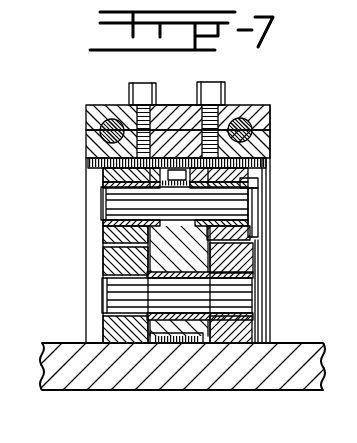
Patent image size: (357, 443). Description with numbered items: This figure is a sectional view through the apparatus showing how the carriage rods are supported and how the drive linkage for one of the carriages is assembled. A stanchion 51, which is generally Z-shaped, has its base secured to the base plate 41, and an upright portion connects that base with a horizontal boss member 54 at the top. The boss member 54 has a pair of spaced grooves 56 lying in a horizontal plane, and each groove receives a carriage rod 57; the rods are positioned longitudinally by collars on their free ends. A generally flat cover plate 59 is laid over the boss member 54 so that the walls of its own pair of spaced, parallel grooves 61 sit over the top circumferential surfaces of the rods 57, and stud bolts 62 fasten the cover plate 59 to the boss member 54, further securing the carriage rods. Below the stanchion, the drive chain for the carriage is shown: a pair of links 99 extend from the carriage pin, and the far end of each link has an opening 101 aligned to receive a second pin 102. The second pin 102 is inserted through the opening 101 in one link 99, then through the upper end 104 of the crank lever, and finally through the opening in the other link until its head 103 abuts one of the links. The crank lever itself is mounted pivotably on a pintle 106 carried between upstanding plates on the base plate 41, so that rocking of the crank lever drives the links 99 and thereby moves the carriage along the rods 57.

The base plate 41 is at (292, 377).
The stanchion 51 is at (275, 314).
The horizontal boss member 54 is at (258, 143).
The groove 56 is at (99, 130).
The carriage rod 57 is at (100, 108).
The cover plate 59 is at (172, 105).
The groove 61 is at (128, 110).
The stud bolt 62 is at (222, 85).
The link 99 is at (103, 237).
The opening 101 is at (246, 186).
The second pin 102 is at (112, 194).
The head 103 is at (256, 206).
The upper end of crank lever 104 is at (187, 345).
The pintle 106 is at (110, 296).